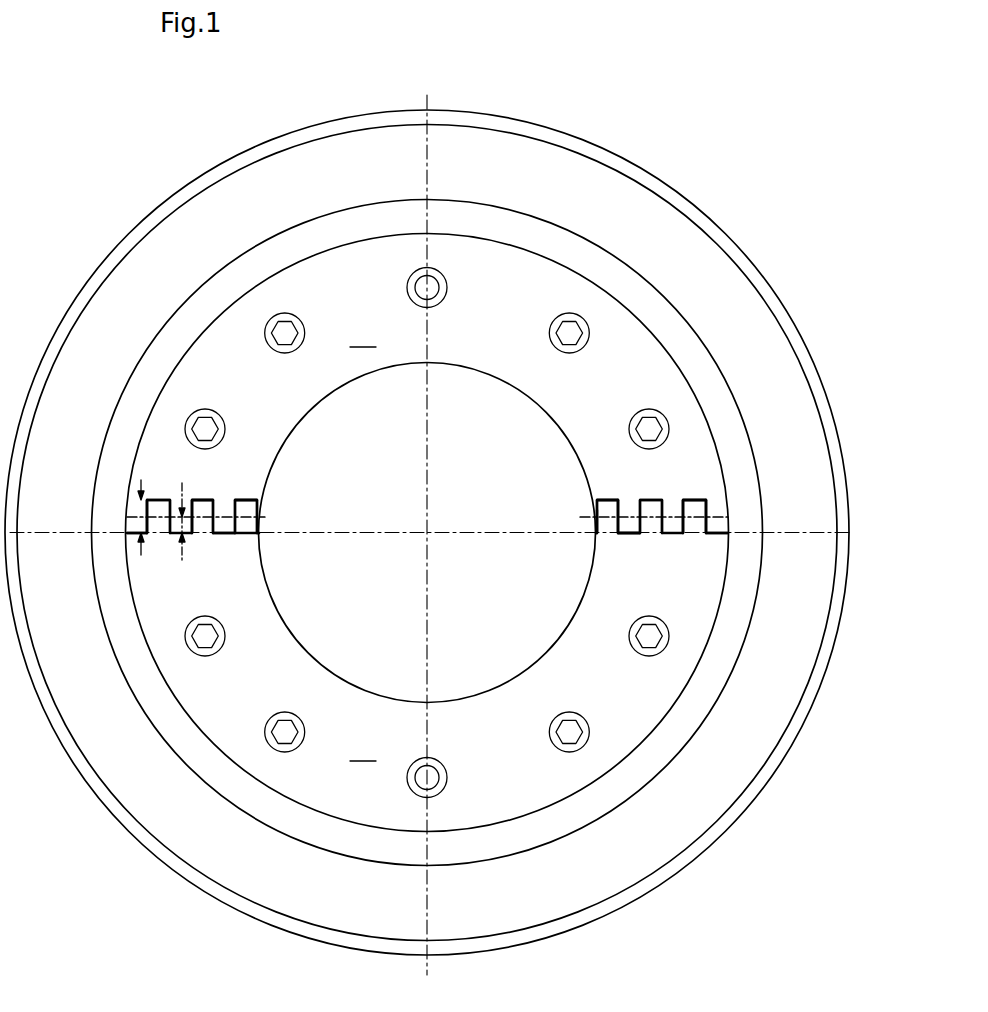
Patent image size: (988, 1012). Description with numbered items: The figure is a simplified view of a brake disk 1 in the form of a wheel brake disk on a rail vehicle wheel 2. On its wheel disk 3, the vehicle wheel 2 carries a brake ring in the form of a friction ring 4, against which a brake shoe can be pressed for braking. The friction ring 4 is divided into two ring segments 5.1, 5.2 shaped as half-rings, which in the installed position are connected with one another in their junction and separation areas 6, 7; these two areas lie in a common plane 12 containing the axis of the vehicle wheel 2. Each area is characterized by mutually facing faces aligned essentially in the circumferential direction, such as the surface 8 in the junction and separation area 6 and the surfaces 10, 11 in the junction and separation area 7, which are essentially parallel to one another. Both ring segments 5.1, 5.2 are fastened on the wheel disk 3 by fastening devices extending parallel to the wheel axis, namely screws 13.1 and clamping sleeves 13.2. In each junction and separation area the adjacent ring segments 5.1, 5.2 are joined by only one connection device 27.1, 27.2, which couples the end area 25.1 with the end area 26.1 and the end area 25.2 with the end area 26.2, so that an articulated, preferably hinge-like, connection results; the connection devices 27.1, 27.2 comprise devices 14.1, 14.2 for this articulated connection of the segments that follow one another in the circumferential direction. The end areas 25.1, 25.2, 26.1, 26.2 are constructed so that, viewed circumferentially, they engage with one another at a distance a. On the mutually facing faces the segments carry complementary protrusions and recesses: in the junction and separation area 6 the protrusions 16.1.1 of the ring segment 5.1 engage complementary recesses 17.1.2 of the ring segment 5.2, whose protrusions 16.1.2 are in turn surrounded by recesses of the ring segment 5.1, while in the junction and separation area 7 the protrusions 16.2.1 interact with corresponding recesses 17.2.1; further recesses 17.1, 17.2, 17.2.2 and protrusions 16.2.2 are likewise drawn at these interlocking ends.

The brake disk 1 is at (291, 172).
The rail vehicle wheel 2 is at (519, 98).
The wheel disk 3 is at (648, 212).
The friction ring 4 is at (688, 443).
The ring segment 5.1 is at (364, 336).
The ring segment 5.2 is at (364, 750).
The junction and separation area 6 is at (132, 522).
The junction and separation area 7 is at (714, 526).
The surface 8 is at (222, 520).
The surface 10 is at (649, 505).
The surface 11 is at (629, 528).
The common plane 12 is at (366, 530).
The screw 13.1 is at (294, 318).
The clamping sleeve 13.2 is at (433, 280).
The device for articulated connection 14.1 is at (248, 508).
The device for articulated connection 14.2 is at (617, 517).
The protrusion 16.1.1 is at (139, 497).
The protrusion 16.1.2 is at (202, 523).
The protrusion 16.2.1 is at (715, 507).
The tooth flank 16.2.2 is at (694, 527).
The tooth 17.1 is at (148, 499).
The tooth 17.2 is at (198, 497).
The recess 17.1.2 is at (138, 543).
The recess 17.2.1 is at (697, 498).
The tooth base 17.2.2 is at (631, 530).
The end area 25.1 is at (250, 490).
The end area 25.2 is at (608, 490).
The end area 26.1 is at (252, 540).
The end area 26.2 is at (603, 541).
The connection device 27.1 is at (263, 516).
The connection device 27.2 is at (588, 518).
The distance a is at (161, 519).